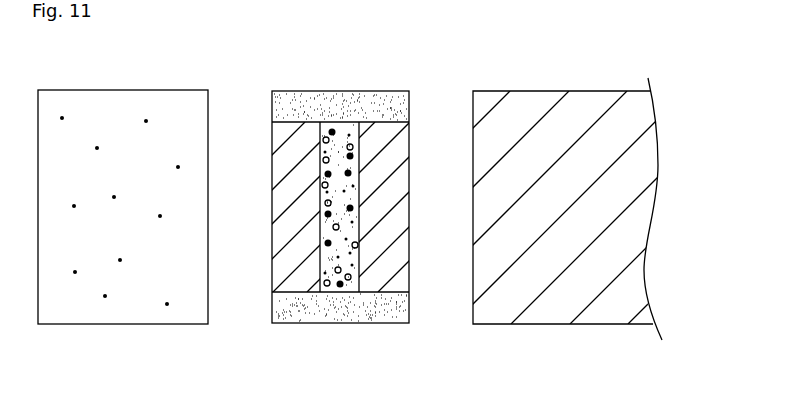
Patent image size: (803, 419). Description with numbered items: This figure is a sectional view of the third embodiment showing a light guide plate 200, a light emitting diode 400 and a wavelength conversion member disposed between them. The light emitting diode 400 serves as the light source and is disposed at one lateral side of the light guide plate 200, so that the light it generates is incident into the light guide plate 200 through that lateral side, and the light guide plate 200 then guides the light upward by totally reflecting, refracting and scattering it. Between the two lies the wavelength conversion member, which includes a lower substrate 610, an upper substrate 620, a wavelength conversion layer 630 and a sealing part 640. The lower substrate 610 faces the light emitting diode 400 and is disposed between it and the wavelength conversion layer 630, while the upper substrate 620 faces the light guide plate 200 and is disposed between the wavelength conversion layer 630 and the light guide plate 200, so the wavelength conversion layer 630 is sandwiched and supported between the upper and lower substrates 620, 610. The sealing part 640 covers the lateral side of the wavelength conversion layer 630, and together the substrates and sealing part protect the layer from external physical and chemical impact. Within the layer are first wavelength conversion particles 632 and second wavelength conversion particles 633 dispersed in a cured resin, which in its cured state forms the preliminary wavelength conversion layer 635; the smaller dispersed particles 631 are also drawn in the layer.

The light guide plate 200 is at (558, 315).
The light emitting diode 400 is at (118, 316).
The lower substrate 610 is at (287, 296).
The upper substrate 620 is at (393, 257).
The wavelength conversion layer 630 is at (354, 268).
The small particles 631 is at (352, 265).
The first wavelength conversion particles 632 is at (408, 248).
The second wavelength conversion particles 633 is at (340, 288).
The preliminary wavelength conversion layer 635 is at (327, 287).
The sealing part 640 is at (368, 97).